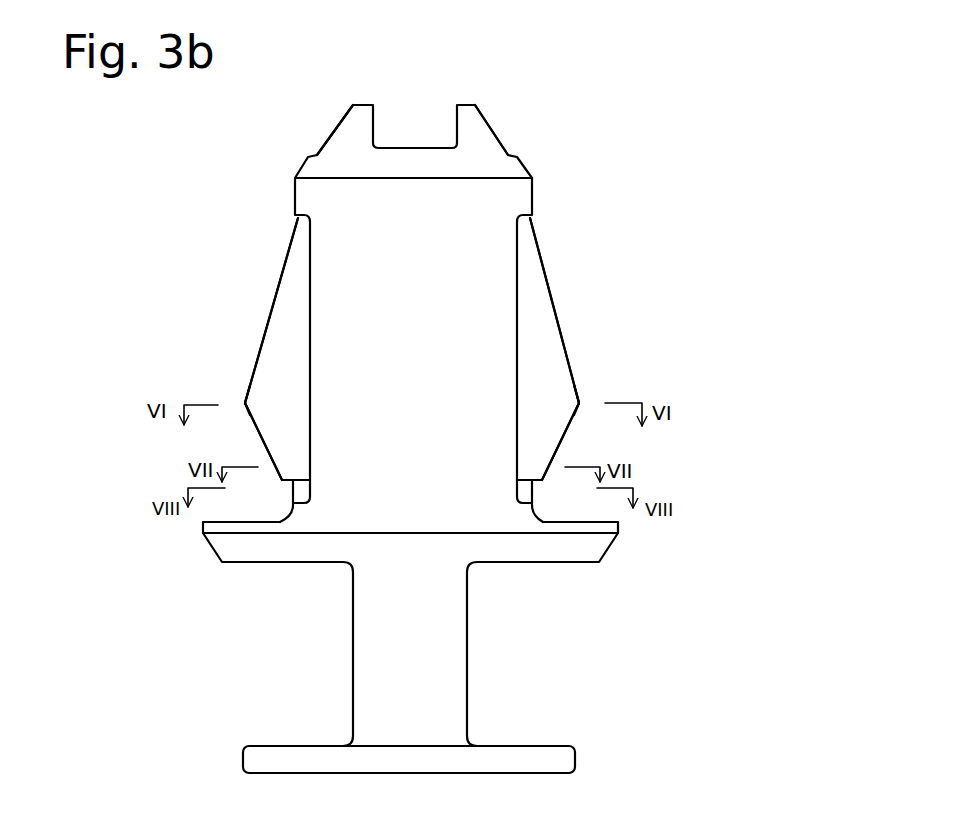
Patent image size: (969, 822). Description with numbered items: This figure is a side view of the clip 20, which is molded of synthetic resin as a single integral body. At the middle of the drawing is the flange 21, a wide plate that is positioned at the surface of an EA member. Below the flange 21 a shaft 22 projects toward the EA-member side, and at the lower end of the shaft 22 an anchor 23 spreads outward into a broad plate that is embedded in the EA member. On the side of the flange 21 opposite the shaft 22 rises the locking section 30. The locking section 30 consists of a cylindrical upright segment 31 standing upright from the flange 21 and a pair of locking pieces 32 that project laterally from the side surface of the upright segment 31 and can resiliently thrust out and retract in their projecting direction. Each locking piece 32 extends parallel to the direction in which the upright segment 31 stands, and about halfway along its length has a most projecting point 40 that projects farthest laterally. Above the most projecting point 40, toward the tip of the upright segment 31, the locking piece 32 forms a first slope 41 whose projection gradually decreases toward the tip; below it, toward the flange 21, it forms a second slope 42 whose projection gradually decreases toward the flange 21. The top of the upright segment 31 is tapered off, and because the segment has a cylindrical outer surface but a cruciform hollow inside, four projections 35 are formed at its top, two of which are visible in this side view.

The clip 20 is at (650, 182).
The locking section 30 is at (540, 150).
The projections 35 is at (345, 130).
The upright segment 31 is at (507, 203).
The locking pieces 32 is at (280, 337).
The first slope 41 is at (273, 292).
The most projecting point 40 is at (245, 403).
The second slope 42 is at (254, 437).
The flange 21 is at (596, 540).
The shaft 22 is at (460, 635).
The anchor 23 is at (525, 753).